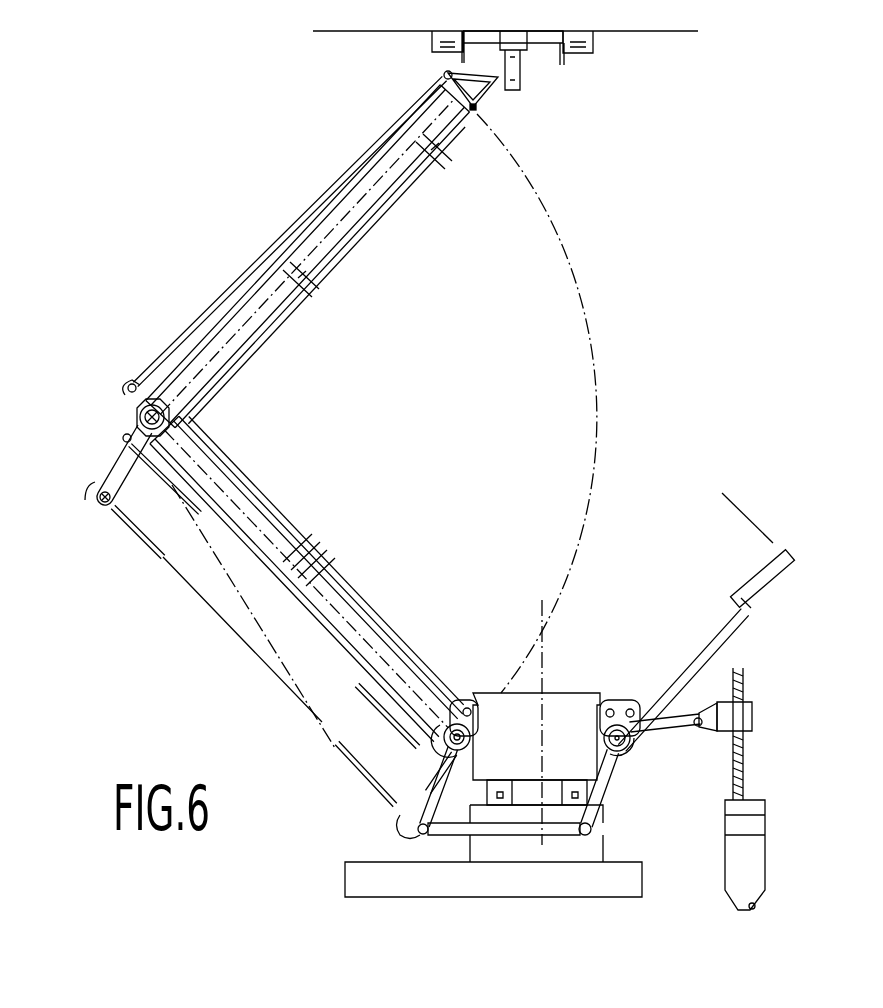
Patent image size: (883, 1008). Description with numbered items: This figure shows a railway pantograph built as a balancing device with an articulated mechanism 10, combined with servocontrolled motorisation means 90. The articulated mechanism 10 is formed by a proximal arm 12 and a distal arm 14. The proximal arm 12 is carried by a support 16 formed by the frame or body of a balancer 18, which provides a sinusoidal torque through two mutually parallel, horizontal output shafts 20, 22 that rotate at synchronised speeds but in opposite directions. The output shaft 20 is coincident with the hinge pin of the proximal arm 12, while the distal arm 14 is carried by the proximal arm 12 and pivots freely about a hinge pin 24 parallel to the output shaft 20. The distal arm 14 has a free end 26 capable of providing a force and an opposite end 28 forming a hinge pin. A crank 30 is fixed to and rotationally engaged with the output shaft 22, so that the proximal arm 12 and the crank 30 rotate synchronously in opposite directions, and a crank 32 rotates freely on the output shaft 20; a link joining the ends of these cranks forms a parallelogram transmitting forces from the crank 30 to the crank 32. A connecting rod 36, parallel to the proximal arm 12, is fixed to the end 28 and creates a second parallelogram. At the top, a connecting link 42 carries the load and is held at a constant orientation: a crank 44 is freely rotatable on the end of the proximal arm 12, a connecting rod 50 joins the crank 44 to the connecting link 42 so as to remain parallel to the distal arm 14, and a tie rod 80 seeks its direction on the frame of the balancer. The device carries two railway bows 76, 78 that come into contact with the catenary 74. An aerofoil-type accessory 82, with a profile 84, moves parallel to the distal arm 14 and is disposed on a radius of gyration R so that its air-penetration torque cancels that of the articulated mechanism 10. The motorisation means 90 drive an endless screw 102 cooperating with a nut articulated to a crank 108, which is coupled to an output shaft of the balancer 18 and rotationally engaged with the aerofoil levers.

The articulated mechanism 10 is at (215, 245).
The proximal arm 12 is at (328, 563).
The distal arm 14 is at (302, 290).
The support 16 is at (531, 690).
The balancer 18 is at (602, 833).
The output shaft 20 is at (453, 707).
The output shaft 22 is at (610, 705).
The hinge pin 24 is at (172, 418).
The free end 26 is at (473, 110).
The opposite end 28 is at (99, 504).
The crank 30 is at (607, 770).
The crank 32 is at (388, 793).
The connecting rod 36 is at (143, 540).
The connecting link 42 is at (497, 92).
The crank 44 is at (130, 398).
The connecting rod 50 is at (320, 200).
The catenary 74 is at (333, 31).
The railway bow 76 is at (446, 31).
The railway bow 78 is at (600, 31).
The tie rod 80 is at (377, 713).
The accessory 82 is at (740, 632).
The profile 84 is at (770, 570).
The motorisation means 90 is at (778, 803).
The endless screw 102 is at (747, 750).
The crank 108 is at (668, 730).
The radius of gyration R is at (733, 512).